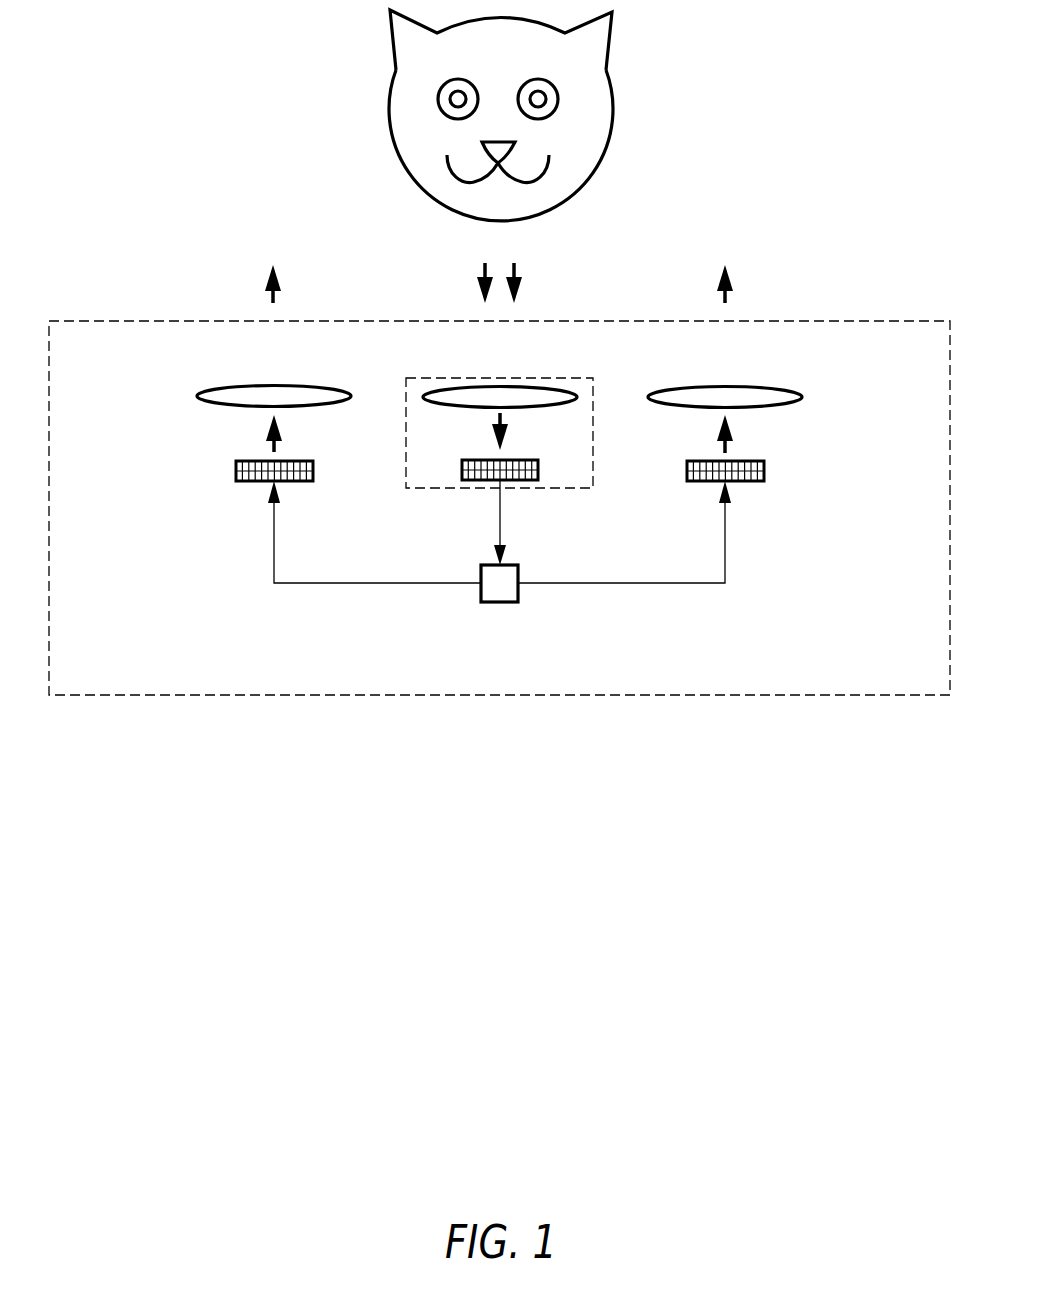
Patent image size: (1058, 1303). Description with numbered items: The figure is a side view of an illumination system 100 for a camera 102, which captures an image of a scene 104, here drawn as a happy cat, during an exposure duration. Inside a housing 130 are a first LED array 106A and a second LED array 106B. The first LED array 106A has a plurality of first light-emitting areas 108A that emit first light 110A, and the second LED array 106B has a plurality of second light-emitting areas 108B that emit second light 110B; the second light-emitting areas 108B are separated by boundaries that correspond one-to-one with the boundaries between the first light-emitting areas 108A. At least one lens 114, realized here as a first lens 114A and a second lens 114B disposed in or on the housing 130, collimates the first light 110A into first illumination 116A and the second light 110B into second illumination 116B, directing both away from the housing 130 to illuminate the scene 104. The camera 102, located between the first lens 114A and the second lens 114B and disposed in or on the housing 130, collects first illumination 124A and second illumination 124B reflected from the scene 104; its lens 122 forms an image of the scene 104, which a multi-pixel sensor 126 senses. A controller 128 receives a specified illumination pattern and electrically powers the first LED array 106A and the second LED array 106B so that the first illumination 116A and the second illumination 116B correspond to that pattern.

The illumination system 100 is at (201, 177).
The camera 102 is at (595, 432).
The scene 104 is at (387, 113).
The first light-emitting diode (LED) array 106A is at (247, 482).
The second LED array 106B is at (698, 482).
The first light-emitting areas 108A is at (298, 482).
The second light-emitting areas 108B is at (748, 482).
The first light 110A is at (266, 430).
The second light 110B is at (733, 430).
The at least one lens 114 is at (449, 369).
The first lens 114A is at (230, 386).
The second lens 114B is at (682, 386).
The first illumination 116A is at (265, 286).
The second illumination 116B is at (733, 285).
The lens 122 is at (457, 386).
The first illumination reflected from the scene 124A is at (478, 287).
The second illumination reflected from the scene 124B is at (520, 286).
The multi-pixel sensor 126 is at (525, 481).
The controller 128 is at (498, 603).
The housing 130 is at (103, 320).